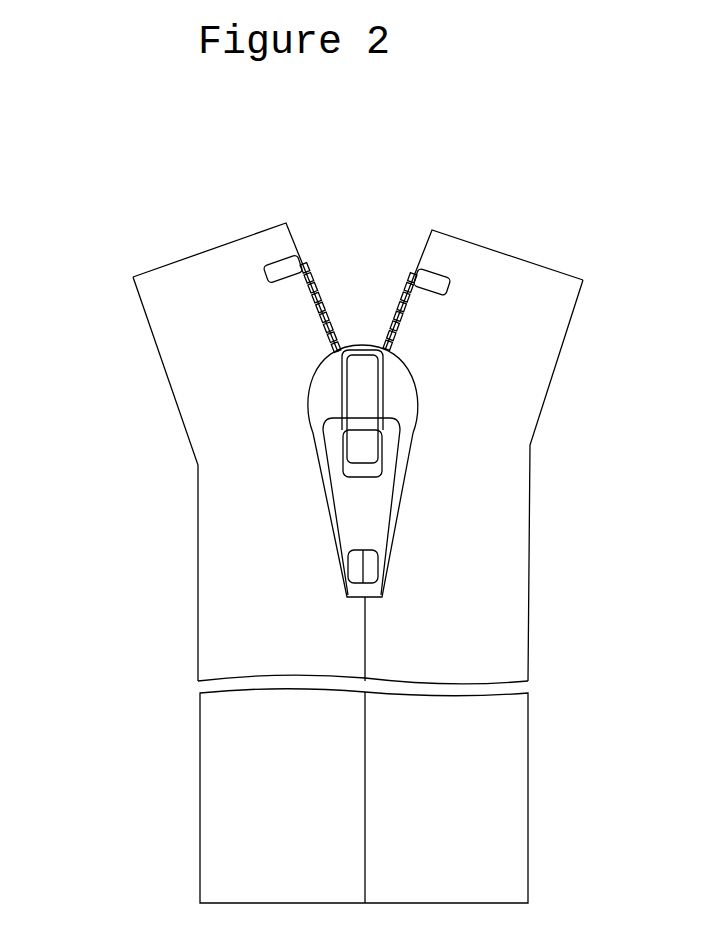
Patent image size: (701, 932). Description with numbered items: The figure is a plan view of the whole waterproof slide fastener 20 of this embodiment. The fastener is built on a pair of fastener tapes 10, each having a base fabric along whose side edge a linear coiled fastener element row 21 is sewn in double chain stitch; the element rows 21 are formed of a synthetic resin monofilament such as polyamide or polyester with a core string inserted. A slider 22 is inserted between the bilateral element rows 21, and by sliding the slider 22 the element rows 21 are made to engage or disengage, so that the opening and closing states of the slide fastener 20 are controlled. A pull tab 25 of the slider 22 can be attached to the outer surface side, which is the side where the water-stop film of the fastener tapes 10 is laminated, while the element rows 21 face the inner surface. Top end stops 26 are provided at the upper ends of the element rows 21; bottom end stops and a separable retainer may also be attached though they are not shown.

The fastener tape 10 is at (193, 398).
The waterproof slide fastener 20 is at (112, 237).
The fastener element row 21 is at (322, 291).
The slider 22 is at (310, 427).
The pull tab 25 is at (327, 525).
The top end stop 26 is at (303, 260).